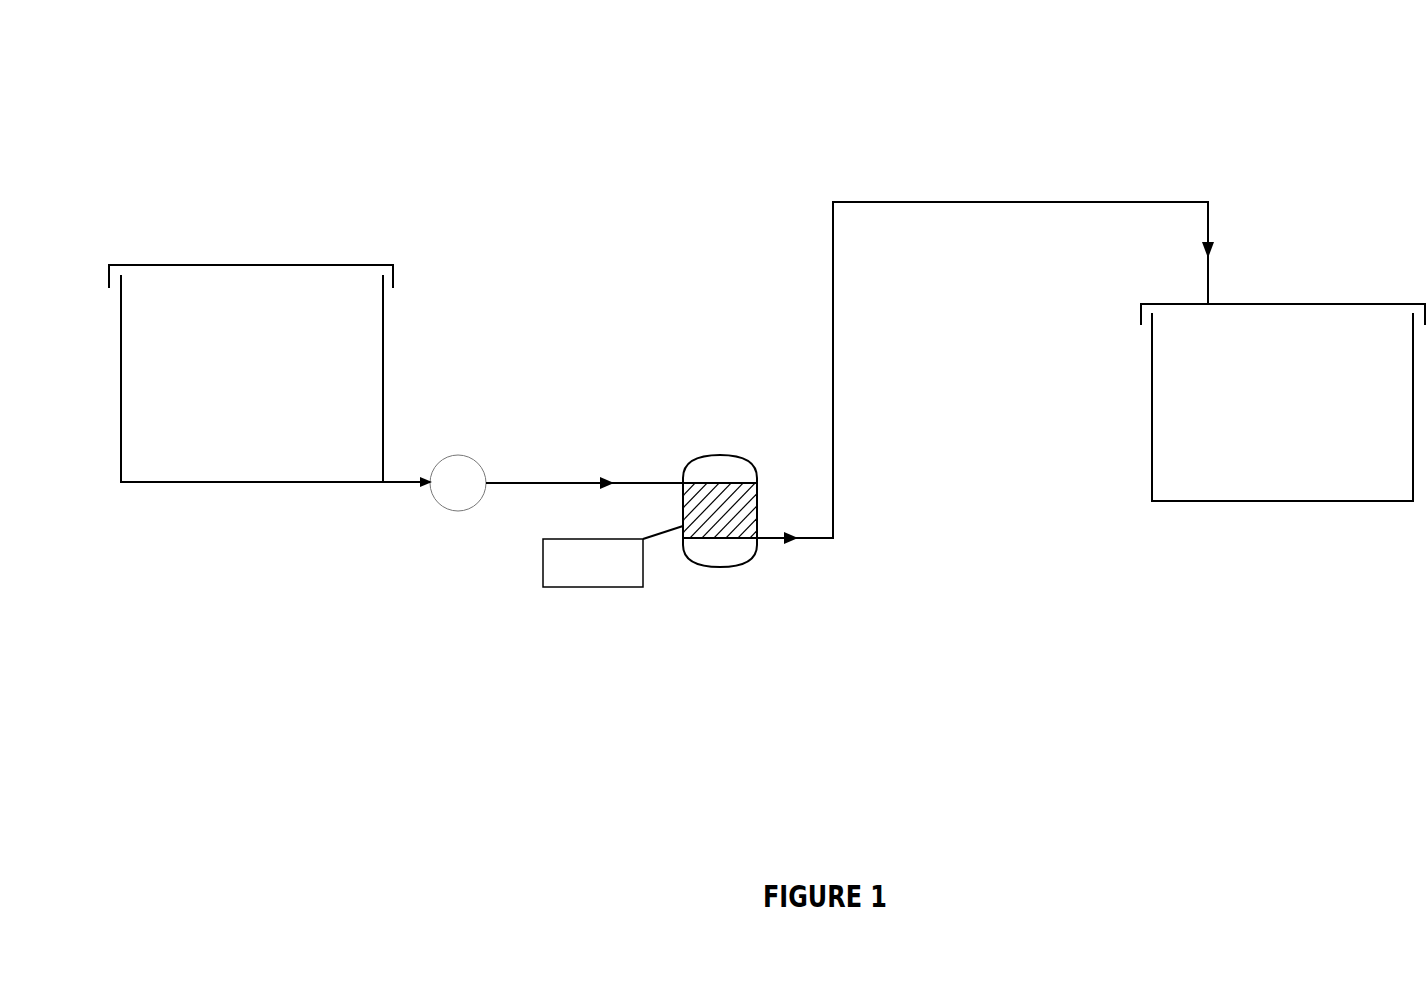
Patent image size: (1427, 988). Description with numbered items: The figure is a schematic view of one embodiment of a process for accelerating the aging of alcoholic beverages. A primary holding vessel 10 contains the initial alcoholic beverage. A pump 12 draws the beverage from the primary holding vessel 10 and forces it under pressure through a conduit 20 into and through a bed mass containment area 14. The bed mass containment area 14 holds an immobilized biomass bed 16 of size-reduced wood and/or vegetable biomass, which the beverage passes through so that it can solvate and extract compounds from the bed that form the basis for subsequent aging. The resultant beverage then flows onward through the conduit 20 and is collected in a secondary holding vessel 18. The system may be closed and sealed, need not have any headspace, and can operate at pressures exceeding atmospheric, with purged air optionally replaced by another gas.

The primary holding vessel 10 is at (205, 265).
The pump 12 is at (466, 458).
The bed mass containment area 14 is at (722, 566).
The biomass bed 16 is at (683, 511).
The secondary holding vessel 18 is at (1336, 304).
The conduit 20 is at (553, 483).